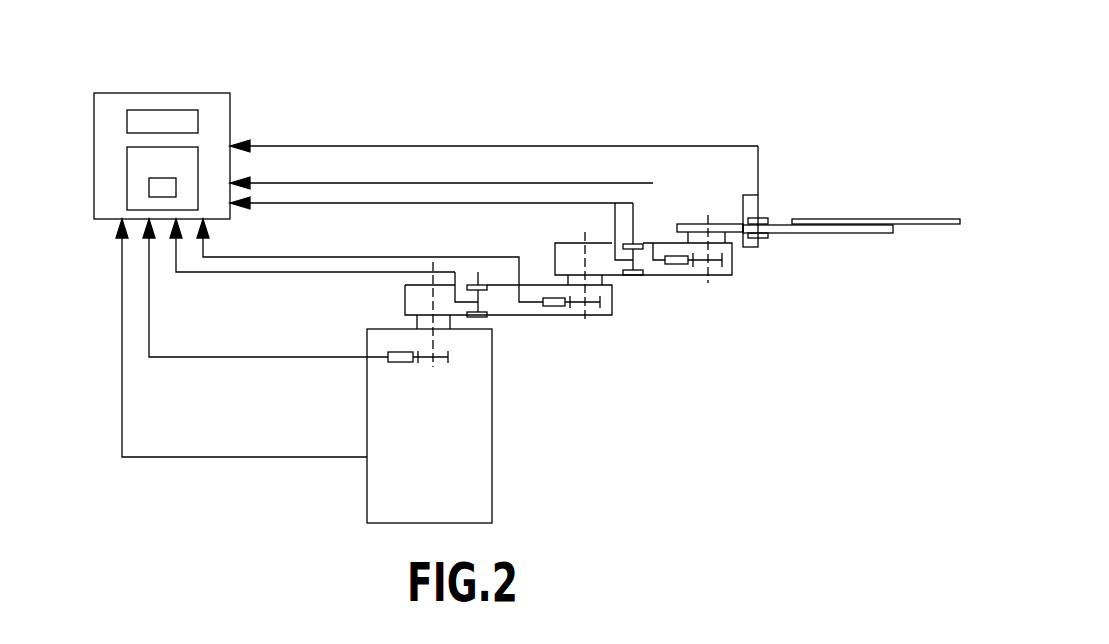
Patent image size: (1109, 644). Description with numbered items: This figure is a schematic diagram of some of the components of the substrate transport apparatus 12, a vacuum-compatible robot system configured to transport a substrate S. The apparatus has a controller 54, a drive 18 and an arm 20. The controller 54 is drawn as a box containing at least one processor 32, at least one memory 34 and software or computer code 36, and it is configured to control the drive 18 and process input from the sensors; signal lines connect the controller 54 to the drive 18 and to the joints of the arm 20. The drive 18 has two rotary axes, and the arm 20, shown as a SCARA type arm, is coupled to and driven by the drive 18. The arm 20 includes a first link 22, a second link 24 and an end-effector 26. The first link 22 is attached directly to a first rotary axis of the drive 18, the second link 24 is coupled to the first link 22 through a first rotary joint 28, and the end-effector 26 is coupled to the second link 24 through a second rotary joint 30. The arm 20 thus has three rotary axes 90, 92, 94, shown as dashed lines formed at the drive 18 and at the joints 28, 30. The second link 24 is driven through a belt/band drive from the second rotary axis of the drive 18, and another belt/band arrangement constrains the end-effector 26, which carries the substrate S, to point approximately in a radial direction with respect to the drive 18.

The substrate transport apparatus 12 is at (800, 109).
The arm 20 is at (748, 377).
The controller 54 is at (150, 92).
The processor 32 is at (198, 121).
The memory 34 is at (127, 160).
The software or computer code 36 is at (149, 186).
The drive 18 is at (492, 485).
The first link 22 is at (535, 318).
The first rotary joint 28 is at (600, 277).
The second link 24 is at (673, 277).
The second rotary joint 30 is at (730, 237).
The end-effector 26 is at (878, 235).
The substrate S is at (927, 218).
The rotary axis 90 is at (433, 262).
The rotary axis 92 is at (585, 235).
The rotary axis 94 is at (708, 215).